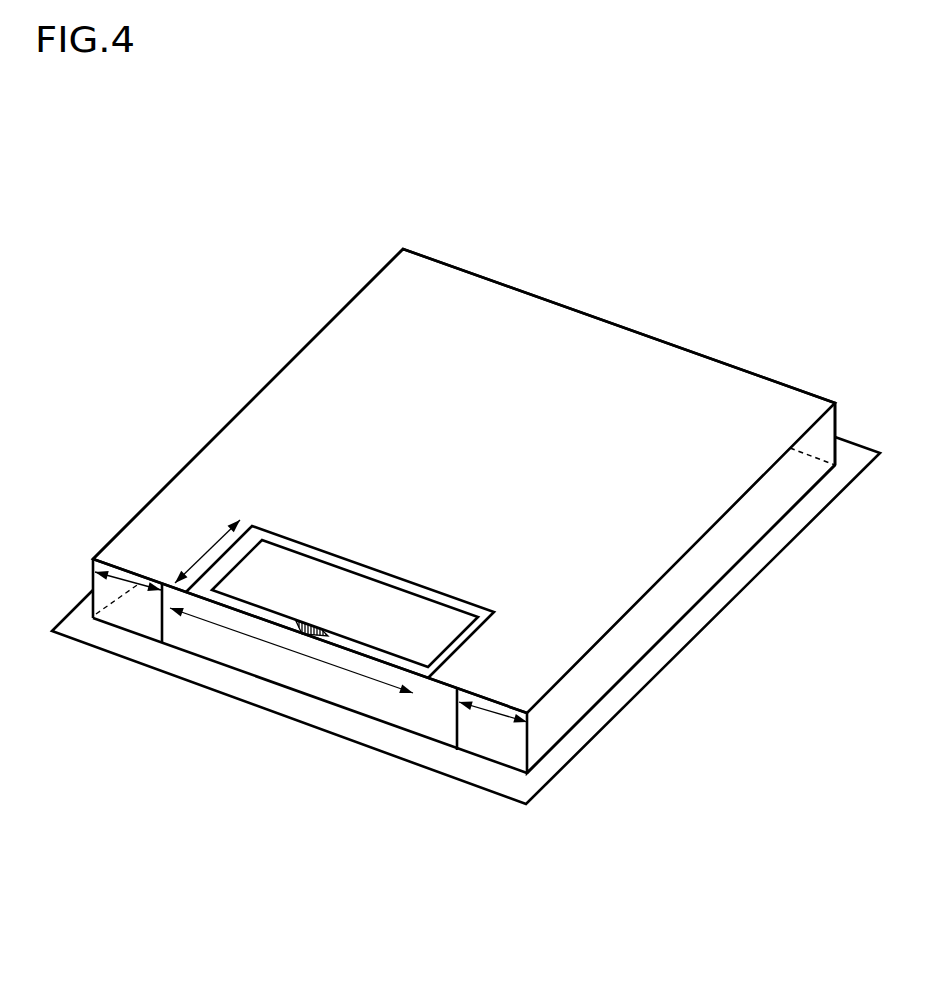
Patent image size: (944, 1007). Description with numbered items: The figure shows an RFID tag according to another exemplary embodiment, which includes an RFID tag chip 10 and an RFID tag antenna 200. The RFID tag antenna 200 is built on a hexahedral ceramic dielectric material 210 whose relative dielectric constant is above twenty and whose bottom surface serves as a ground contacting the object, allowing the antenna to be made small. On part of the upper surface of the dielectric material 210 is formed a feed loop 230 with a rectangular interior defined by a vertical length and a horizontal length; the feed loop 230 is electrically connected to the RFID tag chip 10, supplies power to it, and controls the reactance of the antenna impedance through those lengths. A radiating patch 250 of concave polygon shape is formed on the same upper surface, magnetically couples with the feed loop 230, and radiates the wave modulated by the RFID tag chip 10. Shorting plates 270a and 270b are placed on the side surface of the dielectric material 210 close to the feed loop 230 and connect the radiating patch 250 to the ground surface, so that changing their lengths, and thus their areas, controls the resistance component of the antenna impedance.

The RFID tag chip 10 is at (303, 636).
The RFID tag antenna 200 is at (590, 356).
The ceramic dielectric material 210 is at (667, 600).
The feed loop 230 is at (395, 656).
The radiating patch 250 is at (515, 497).
The shorting plate 270a is at (131, 620).
The shorting plate 270b is at (453, 748).